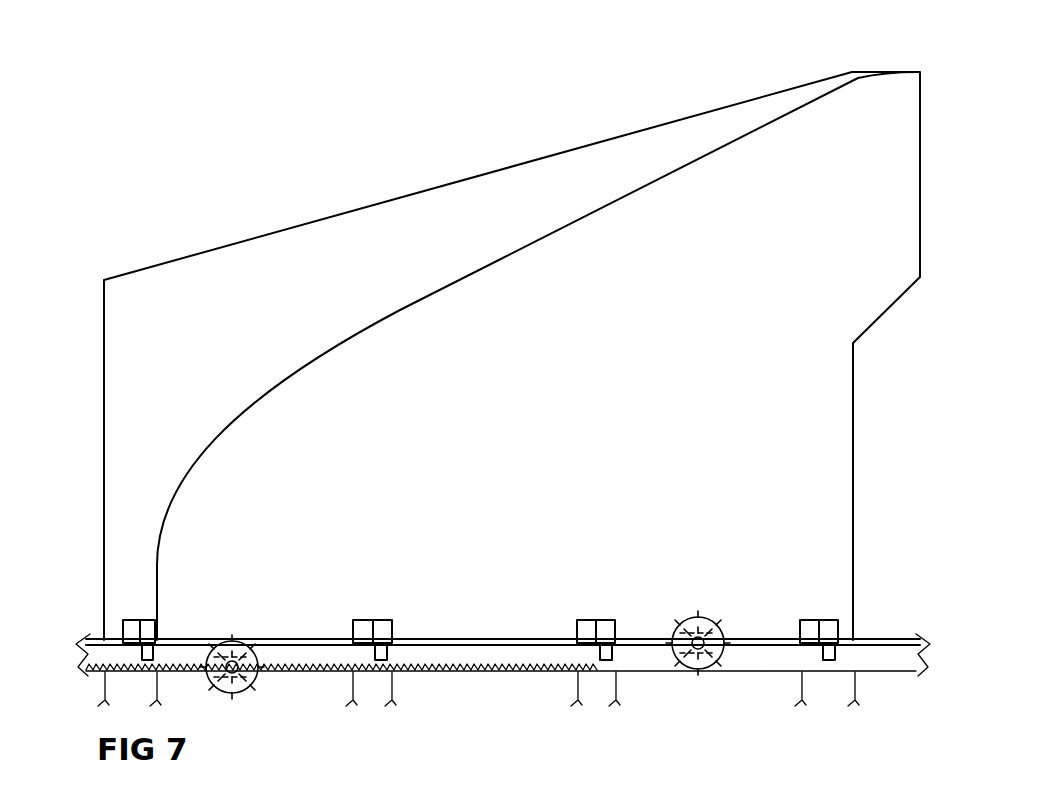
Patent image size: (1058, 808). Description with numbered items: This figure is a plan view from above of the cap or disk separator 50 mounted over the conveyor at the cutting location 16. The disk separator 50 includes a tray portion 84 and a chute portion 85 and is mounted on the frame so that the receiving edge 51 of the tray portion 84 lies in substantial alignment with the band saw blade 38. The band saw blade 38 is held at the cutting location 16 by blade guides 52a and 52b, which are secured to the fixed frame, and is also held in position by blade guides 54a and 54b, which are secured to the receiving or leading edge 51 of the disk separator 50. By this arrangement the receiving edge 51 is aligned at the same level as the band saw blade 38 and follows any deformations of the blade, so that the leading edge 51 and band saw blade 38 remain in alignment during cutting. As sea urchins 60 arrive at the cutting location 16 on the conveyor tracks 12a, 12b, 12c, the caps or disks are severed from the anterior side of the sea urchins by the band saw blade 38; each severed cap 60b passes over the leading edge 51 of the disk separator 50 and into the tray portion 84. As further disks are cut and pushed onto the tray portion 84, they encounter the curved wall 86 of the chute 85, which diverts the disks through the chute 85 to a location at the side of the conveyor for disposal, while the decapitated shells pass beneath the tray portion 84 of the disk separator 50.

The disk separator 50 is at (355, 205).
The curved wall 86 is at (570, 228).
The tray portion 84 is at (487, 440).
The chute portion 85 is at (879, 162).
The receiving edge 51 is at (285, 639).
The cutting location 16 is at (862, 637).
The band saw blade 38 is at (473, 652).
The conveyor track 12a is at (190, 699).
The conveyor track 12b is at (423, 699).
The conveyor track 12c is at (715, 699).
The blade guide 52a is at (828, 625).
The blade guide 52b is at (146, 625).
The blade guide 54a is at (593, 625).
The blade guide 54b is at (382, 625).
The sea urchin 60 is at (256, 672).
The severed cap 60b is at (703, 617).